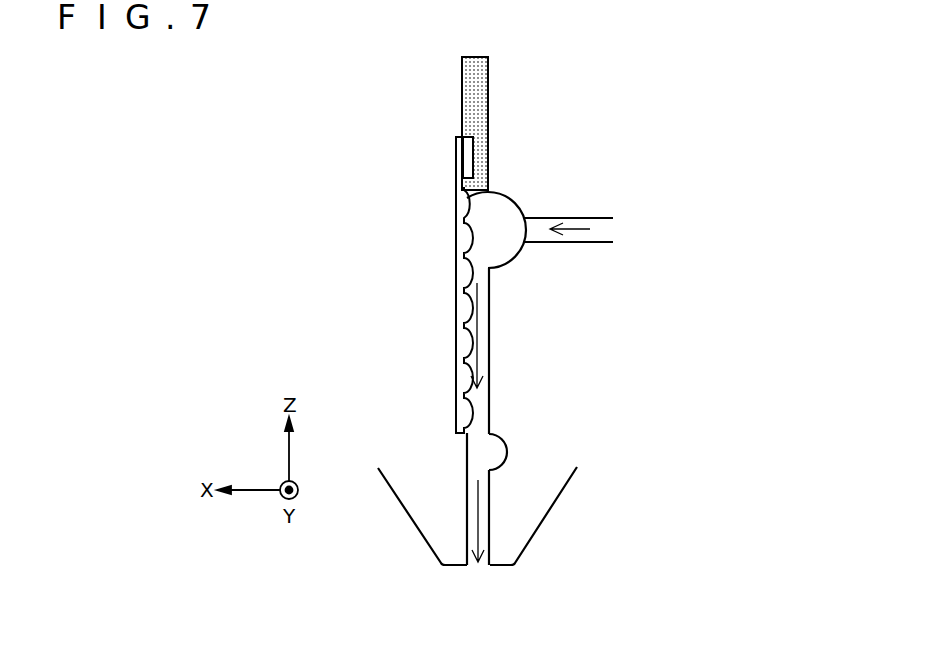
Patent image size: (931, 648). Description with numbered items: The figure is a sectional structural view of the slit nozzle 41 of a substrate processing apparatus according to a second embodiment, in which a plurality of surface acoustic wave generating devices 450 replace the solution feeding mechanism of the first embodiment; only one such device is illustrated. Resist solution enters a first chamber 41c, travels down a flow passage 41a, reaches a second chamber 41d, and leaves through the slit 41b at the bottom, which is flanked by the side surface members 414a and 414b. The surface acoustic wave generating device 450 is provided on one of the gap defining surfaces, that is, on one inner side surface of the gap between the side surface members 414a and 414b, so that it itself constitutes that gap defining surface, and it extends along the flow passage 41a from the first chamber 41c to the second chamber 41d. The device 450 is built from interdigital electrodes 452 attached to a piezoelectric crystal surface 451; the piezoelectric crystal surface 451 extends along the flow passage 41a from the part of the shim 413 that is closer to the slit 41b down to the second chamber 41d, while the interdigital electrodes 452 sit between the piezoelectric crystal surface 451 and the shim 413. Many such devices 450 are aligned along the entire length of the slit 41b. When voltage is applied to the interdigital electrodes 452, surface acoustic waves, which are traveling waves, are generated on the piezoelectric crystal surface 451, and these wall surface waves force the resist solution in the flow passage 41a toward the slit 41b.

The slit nozzle 41 is at (272, 95).
The flow passage 41a is at (481, 427).
The slit 41b is at (485, 570).
The first chamber 41c is at (507, 208).
The second chamber 41d is at (500, 455).
The shim 413 is at (467, 103).
The side surface member 414a is at (437, 540).
The side surface member 414b is at (520, 538).
The surface acoustic wave generating device 450 is at (368, 157).
The piezoelectric crystal surface 451 is at (457, 202).
The interdigital electrodes 452 is at (463, 160).